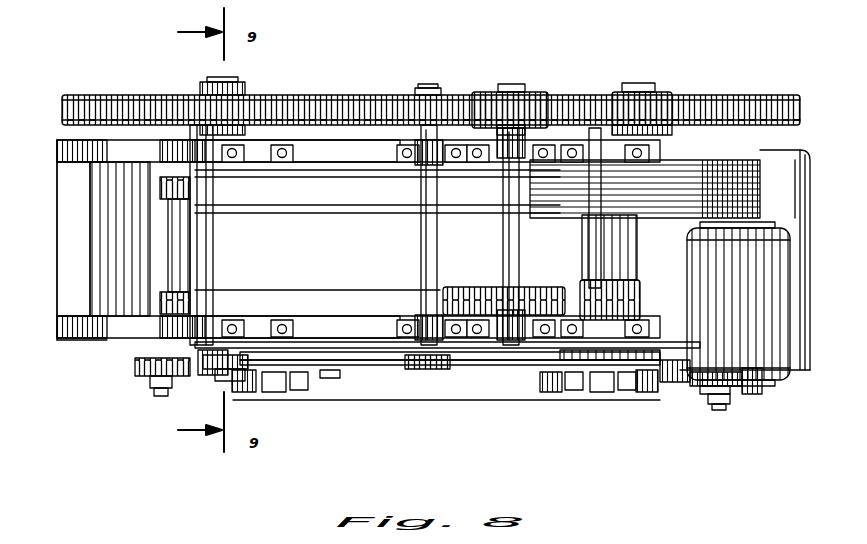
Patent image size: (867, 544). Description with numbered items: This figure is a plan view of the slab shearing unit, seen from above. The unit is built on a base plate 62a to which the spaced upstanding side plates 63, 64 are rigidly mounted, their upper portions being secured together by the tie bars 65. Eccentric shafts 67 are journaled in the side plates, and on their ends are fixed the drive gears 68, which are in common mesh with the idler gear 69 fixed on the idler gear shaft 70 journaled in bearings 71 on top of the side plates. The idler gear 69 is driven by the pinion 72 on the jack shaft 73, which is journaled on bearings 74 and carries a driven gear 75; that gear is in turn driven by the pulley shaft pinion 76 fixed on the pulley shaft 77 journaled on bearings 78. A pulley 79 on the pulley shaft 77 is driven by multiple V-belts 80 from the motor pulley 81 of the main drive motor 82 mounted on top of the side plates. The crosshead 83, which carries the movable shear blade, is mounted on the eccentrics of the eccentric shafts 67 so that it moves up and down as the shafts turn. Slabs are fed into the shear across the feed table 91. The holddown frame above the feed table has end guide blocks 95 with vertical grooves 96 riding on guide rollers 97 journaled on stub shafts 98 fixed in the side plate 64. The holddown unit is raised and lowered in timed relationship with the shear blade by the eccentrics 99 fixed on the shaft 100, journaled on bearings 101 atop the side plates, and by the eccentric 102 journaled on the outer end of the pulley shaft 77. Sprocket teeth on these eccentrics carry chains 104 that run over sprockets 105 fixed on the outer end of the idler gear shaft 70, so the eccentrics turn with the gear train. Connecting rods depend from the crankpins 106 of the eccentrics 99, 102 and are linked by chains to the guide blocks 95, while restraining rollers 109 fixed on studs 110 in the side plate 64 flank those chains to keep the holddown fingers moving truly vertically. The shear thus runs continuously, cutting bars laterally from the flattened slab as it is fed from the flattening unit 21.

The base frame 21 is at (70, 342).
The base plate 62a is at (62, 181).
The side plate 63 is at (60, 140).
The side plate 64 is at (100, 338).
The tie bars 65 is at (182, 162).
The eccentric shafts 67 is at (214, 375).
The drive gears 68 is at (272, 95).
The idler gear 69 is at (402, 96).
The idler gear shaft 70 is at (421, 181).
The bearings 71 is at (438, 140).
The pinion 72 is at (540, 92).
The jack shaft 73 is at (503, 240).
The bearings 74 is at (498, 125).
The driven gear 75 is at (476, 287).
The pulley shaft pinion 76 is at (582, 262).
The pulley shaft 77 is at (584, 241).
The bearings 78 is at (618, 125).
The pulley 79 is at (535, 210).
The multiple V-belts 80 is at (712, 172).
The motor pulley 81 is at (765, 160).
The main drive motor 82 is at (782, 372).
The crosshead 83 is at (326, 205).
The feed table 91 is at (450, 370).
The end guide blocks 95 is at (182, 370).
The vertical grooves 96 is at (196, 381).
The guide rollers 97 is at (135, 368).
The stub shafts 98 is at (152, 392).
The eccentrics 99 is at (290, 348).
The shaft 100 is at (292, 290).
The bearings 101 is at (280, 140).
The eccentric 102 is at (560, 360).
The chains 104 is at (375, 360).
The sprockets 105 is at (428, 365).
The crankpins 106 is at (276, 392).
The restraining rollers 109 is at (240, 392).
The studs 110 is at (300, 390).